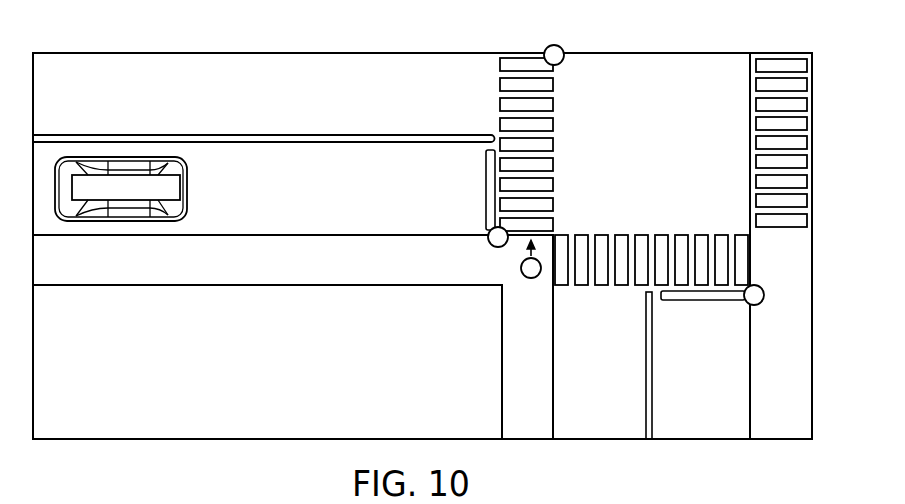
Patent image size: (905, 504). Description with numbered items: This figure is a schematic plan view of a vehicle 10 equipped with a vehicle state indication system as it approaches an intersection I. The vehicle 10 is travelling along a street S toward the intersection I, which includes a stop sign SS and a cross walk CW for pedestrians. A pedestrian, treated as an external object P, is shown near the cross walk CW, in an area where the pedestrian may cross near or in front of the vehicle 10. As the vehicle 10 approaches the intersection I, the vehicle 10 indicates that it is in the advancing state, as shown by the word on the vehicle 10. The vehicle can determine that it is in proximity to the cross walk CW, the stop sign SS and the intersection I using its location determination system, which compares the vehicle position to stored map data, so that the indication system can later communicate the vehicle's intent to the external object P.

The vehicle 10 is at (186, 197).
The street S is at (479, 121).
The stop sign SS is at (556, 45).
The cross walk CW is at (554, 124).
The intersection I is at (677, 116).
The external object P is at (529, 280).